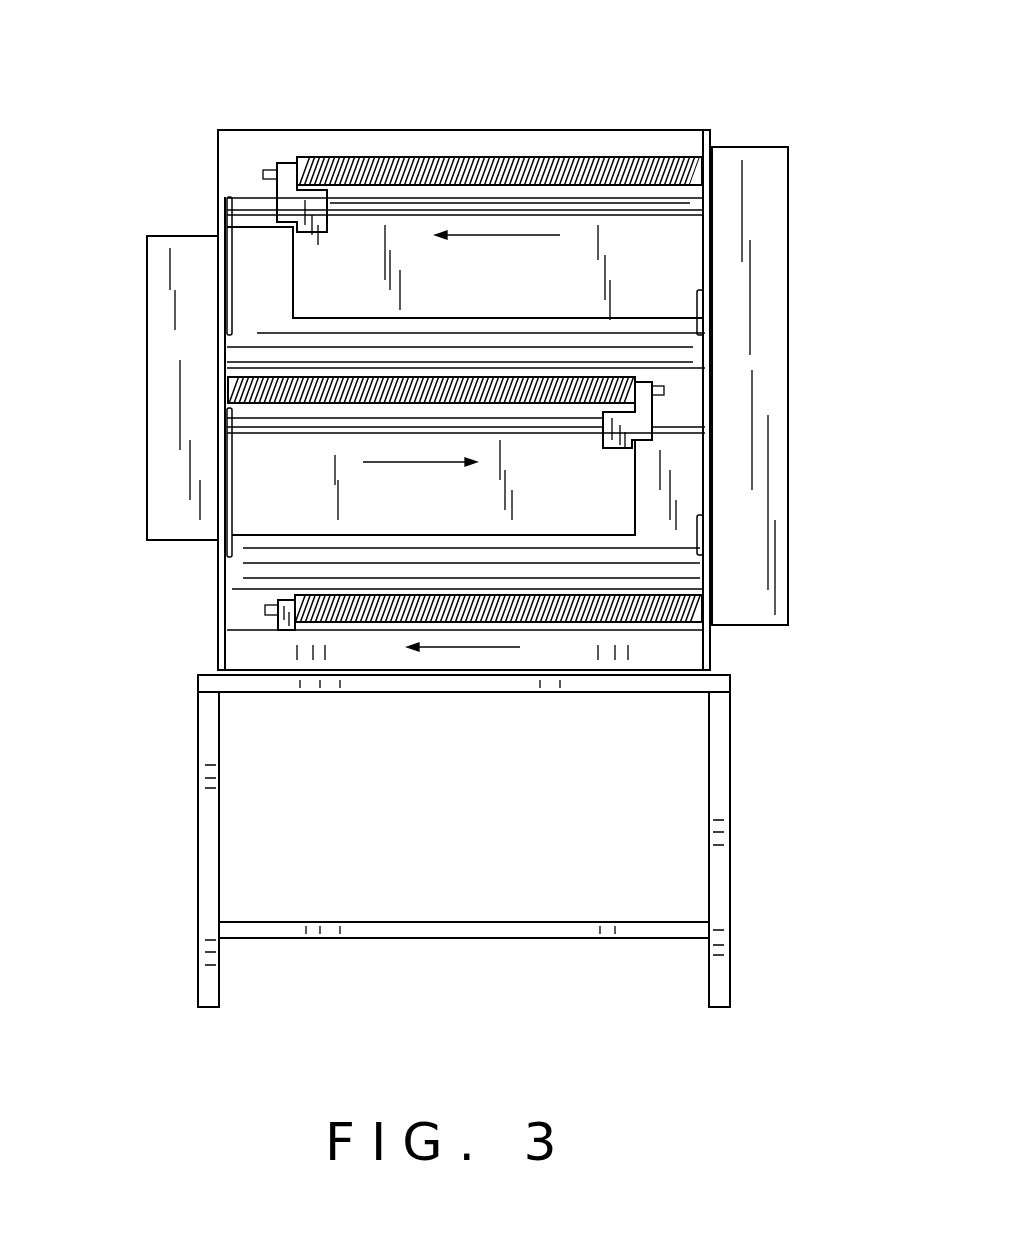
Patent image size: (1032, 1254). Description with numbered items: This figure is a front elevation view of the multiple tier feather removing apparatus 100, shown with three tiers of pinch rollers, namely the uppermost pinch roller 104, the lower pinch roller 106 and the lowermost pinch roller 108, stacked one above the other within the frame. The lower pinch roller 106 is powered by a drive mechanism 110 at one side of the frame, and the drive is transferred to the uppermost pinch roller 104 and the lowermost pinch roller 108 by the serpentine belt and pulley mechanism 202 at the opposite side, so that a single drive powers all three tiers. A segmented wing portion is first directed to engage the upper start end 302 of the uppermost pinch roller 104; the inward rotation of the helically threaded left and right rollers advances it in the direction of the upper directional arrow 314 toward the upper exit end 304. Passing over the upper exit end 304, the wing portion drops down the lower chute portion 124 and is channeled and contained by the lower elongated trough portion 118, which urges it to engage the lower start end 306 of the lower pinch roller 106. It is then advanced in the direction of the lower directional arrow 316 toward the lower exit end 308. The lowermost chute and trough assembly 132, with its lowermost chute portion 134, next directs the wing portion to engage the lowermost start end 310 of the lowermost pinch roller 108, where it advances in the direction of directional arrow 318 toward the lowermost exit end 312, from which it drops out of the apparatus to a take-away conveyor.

The feather removing apparatus 100 is at (712, 52).
The uppermost pinch roller 104 is at (475, 148).
The lower pinch roller 106 is at (323, 409).
The lowermost pinch roller 108 is at (392, 625).
The drive mechanism 110 is at (134, 414).
The lower elongated trough portion 118 is at (263, 333).
The lower chute portion 124 is at (253, 240).
The lowermost chute and trough assembly 132 is at (230, 553).
The lowermost chute portion 134 is at (683, 478).
The serpentine belt and pulley mechanism 202 is at (803, 282).
The upper start end 302 is at (683, 138).
The upper exit end 304 is at (356, 150).
The lower start end 306 is at (245, 378).
The lower exit end 308 is at (617, 373).
The lowermost start end 310 is at (694, 590).
The lowermost exit end 312 is at (312, 590).
The upper directional arrow 314 is at (485, 236).
The lower directional arrow 316 is at (434, 470).
The directional arrow 318 is at (455, 650).